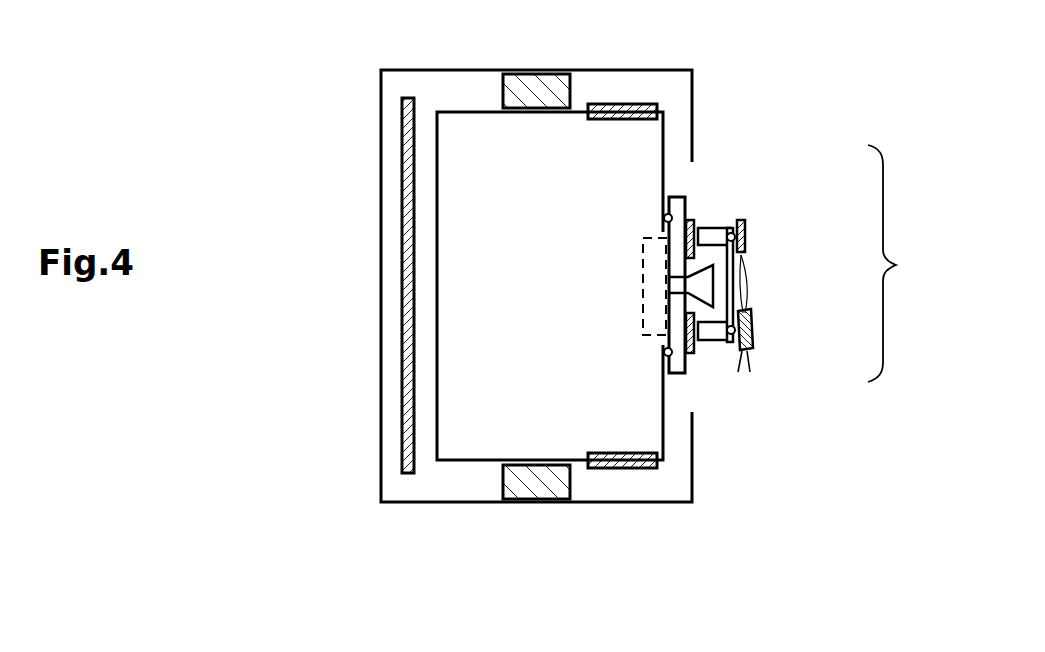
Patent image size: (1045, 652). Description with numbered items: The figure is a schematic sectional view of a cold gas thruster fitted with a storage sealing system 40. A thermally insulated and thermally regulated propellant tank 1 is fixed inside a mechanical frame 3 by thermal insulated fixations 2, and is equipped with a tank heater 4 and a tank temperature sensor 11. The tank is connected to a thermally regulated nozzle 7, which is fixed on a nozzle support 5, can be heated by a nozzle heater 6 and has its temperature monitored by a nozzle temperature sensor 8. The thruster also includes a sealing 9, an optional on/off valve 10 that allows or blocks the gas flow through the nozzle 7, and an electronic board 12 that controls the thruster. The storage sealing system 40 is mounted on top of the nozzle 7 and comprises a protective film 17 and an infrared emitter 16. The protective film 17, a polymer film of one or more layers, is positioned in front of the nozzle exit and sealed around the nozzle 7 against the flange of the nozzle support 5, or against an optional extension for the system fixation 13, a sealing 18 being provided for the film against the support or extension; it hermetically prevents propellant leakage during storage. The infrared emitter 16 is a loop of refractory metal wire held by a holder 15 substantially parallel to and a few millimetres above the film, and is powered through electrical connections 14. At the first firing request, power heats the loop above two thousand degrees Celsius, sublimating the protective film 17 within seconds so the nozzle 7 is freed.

The propellant tank 1 is at (473, 100).
The thermal insulated fixations 2 is at (530, 509).
The mechanical frame 3 is at (381, 478).
The tank heater 4 is at (618, 480).
The nozzle support 5 is at (678, 388).
The nozzle heater 6 is at (710, 356).
The nozzle 7 is at (703, 270).
The nozzle temperature sensor 8 is at (692, 215).
The sealing 9 is at (654, 352).
The on/off valve 10 is at (642, 256).
The tank temperature sensor 11 is at (638, 90).
The electronic board 12 is at (392, 413).
The extension for the system fixation 13 is at (730, 357).
The electrical connections 14 is at (763, 362).
The holder 15 is at (767, 333).
The infrared emitter 16 is at (766, 279).
The protective film 17 is at (747, 251).
The sealing 18 is at (732, 210).
The storage sealing system 40 is at (902, 263).